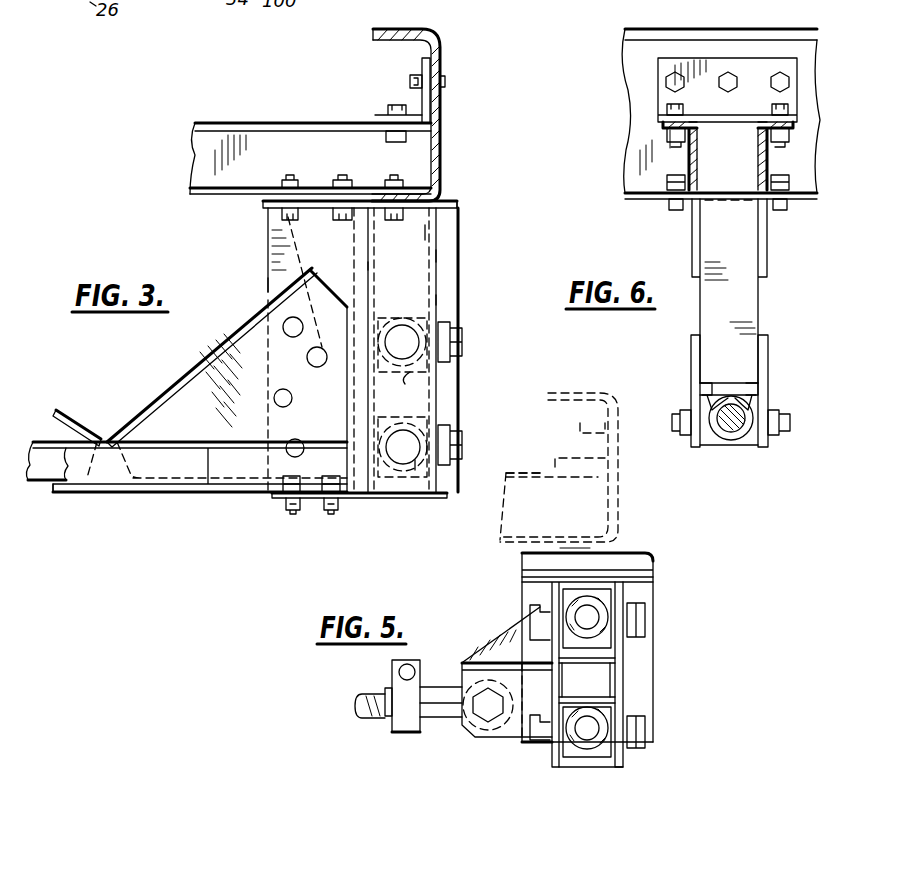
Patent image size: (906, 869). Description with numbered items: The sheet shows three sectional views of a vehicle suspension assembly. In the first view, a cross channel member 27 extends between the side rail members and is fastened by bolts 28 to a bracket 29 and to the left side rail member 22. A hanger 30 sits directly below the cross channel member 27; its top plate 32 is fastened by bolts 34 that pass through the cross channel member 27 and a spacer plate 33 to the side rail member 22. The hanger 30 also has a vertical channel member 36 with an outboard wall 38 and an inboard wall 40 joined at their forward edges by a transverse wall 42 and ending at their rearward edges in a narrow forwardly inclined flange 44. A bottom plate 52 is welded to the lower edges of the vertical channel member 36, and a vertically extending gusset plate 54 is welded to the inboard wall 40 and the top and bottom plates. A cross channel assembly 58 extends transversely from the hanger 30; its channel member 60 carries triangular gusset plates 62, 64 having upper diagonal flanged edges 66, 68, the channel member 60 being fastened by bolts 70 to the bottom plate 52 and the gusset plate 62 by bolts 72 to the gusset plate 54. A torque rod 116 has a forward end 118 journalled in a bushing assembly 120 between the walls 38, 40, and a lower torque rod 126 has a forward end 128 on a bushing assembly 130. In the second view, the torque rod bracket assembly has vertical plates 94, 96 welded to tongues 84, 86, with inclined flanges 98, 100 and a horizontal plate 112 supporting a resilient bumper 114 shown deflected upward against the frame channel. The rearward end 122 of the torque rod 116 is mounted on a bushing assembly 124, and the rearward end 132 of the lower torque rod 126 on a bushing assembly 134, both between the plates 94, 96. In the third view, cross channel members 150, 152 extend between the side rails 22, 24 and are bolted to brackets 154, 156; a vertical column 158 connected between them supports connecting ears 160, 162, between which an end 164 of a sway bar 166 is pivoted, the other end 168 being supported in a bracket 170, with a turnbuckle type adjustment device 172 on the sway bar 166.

In FIG. 3, the left side rail member 22 is at (441, 70).
In FIG. 5, the left side rail member 22 is at (620, 445).
In FIG. 6, the right side rail member 24 is at (635, 85).
In FIG. 3, the cross channel member 27 is at (238, 123).
In FIG. 3, the bolts 28 is at (394, 105).
In FIG. 3, the bracket 29 is at (422, 62).
In FIG. 3, the hanger 30 is at (470, 280).
In FIG. 3, the top plate 32 is at (445, 201).
In FIG. 3, the spacer plate 33 is at (323, 208).
In FIG. 3, the bolts 34 is at (392, 176).
In FIG. 3, the vertical channel member 36 is at (460, 210).
In FIG. 3, the outboard wall 38 is at (436, 255).
In FIG. 3, the inboard wall 40 is at (366, 266).
In FIG. 3, the transverse wall 42 is at (425, 232).
In FIG. 3, the transverse forwardly inclined flange 44 is at (450, 300).
In FIG. 3, the bottom plate 52 is at (445, 497).
In FIG. 3, the vertically extending gusset plate 54 is at (268, 287).
In FIG. 3, the cross channel assembly 58 is at (160, 503).
In FIG. 3, the channel member 60 is at (100, 488).
In FIG. 3, the gusset plate 62 is at (187, 390).
In FIG. 3, the gusset plate 64 is at (50, 425).
In FIG. 3, the upper diagonal flanged edge 66 is at (168, 386).
In FIG. 3, the upper diagonal flanged edge 68 is at (74, 412).
In FIG. 3, the bolts 70 is at (330, 514).
In FIG. 3, the bolts 72 is at (297, 440).
In FIG. 5, the tongue 84 is at (605, 698).
In FIG. 5, the tongue 86 is at (605, 660).
In FIG. 5, the vertical plate 94 is at (620, 680).
In FIG. 5, the vertical plate 96 is at (555, 645).
In FIG. 5, the inclined flange 98 is at (650, 597).
In FIG. 5, the inclined flange 100 is at (525, 597).
In FIG. 5, the horizontal plate 112 is at (635, 567).
In FIG. 5, the resilient bumper 114 is at (625, 557).
In FIG. 3, the torque rod 116 is at (410, 332).
In FIG. 5, the torque rod 116 is at (637, 582).
In FIG. 3, the forward end 118 is at (410, 376).
In FIG. 3, the bushing assembly 120 is at (462, 342).
In FIG. 5, the rearward end 122 is at (600, 605).
In FIG. 5, the bushing assembly 124 is at (640, 628).
In FIG. 3, the lower torque rod 126 is at (415, 468).
In FIG. 5, the lower torque rod 126 is at (593, 750).
In FIG. 3, the forward end 128 is at (420, 420).
In FIG. 3, the bushing assembly 130 is at (462, 445).
In FIG. 5, the rearward end 132 is at (605, 762).
In FIG. 5, the bushing assembly 134 is at (645, 740).
In FIG. 6, the cross channel member 150 is at (689, 145).
In FIG. 5, the cross channel member 150 is at (522, 470).
In FIG. 6, the cross channel member 152 is at (767, 165).
In FIG. 5, the bracket 154 is at (600, 430).
In FIG. 6, the bracket 156 is at (742, 62).
In FIG. 6, the vertical column 158 is at (750, 306).
In FIG. 6, the connecting ear 160 is at (693, 364).
In FIG. 6, the connecting ear 162 is at (763, 444).
In FIG. 6, the end of sway bar 164 is at (750, 444).
In FIG. 5, the sway bar 166 is at (434, 718).
In FIG. 5, the other end of sway bar 168 is at (506, 737).
In FIG. 5, the bracket 170 is at (466, 670).
In FIG. 6, the turnbuckle type length adjustment and tightening device 172 is at (725, 444).
In FIG. 5, the turnbuckle type length adjustment and tightening device 172 is at (365, 720).